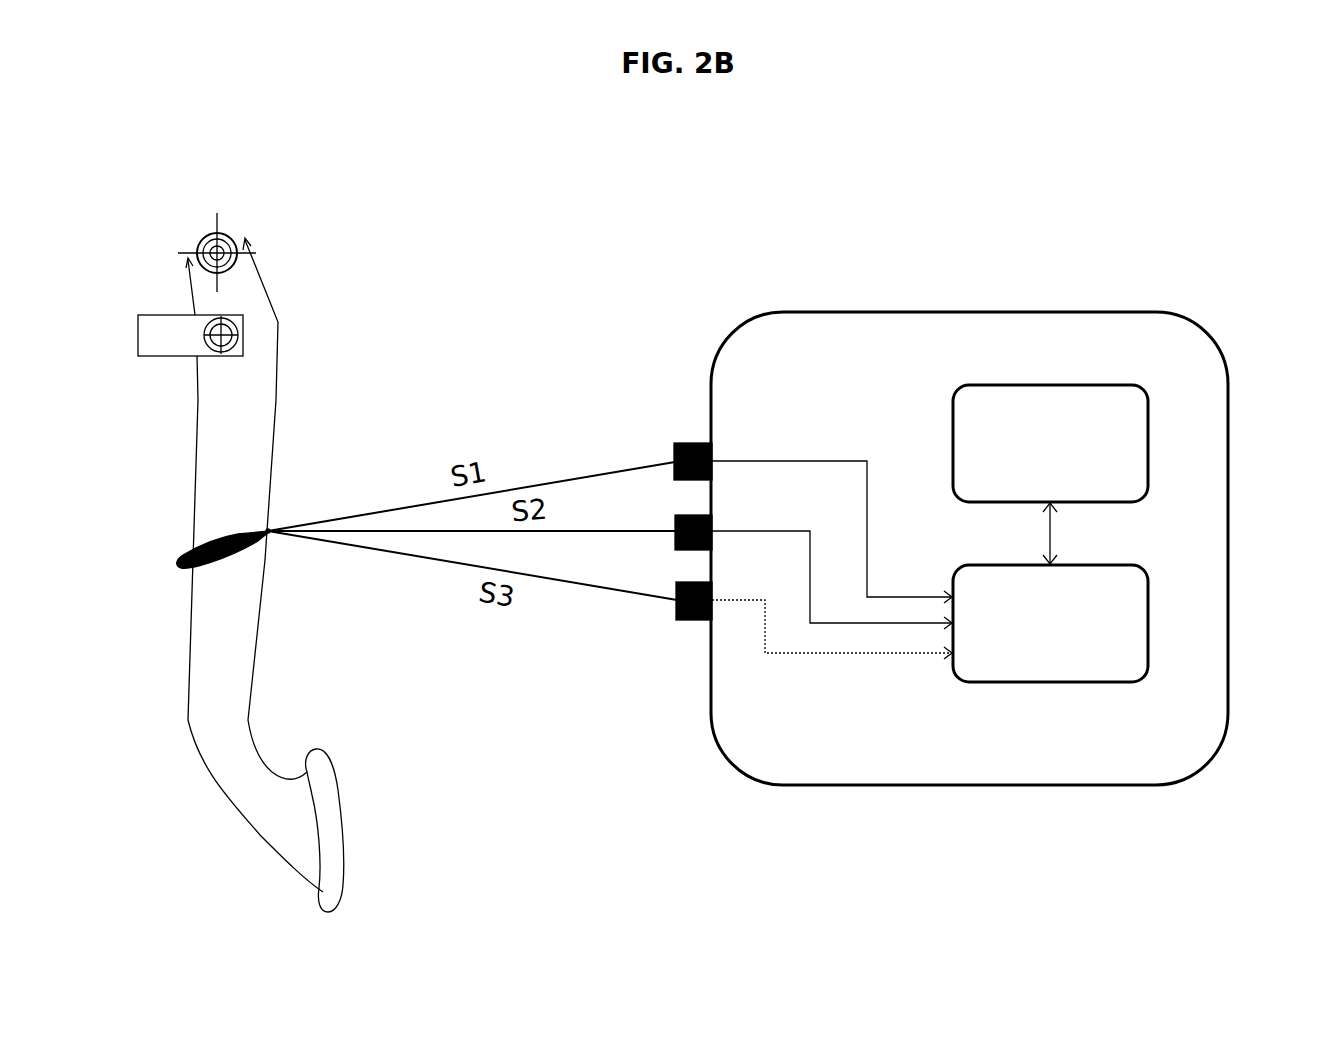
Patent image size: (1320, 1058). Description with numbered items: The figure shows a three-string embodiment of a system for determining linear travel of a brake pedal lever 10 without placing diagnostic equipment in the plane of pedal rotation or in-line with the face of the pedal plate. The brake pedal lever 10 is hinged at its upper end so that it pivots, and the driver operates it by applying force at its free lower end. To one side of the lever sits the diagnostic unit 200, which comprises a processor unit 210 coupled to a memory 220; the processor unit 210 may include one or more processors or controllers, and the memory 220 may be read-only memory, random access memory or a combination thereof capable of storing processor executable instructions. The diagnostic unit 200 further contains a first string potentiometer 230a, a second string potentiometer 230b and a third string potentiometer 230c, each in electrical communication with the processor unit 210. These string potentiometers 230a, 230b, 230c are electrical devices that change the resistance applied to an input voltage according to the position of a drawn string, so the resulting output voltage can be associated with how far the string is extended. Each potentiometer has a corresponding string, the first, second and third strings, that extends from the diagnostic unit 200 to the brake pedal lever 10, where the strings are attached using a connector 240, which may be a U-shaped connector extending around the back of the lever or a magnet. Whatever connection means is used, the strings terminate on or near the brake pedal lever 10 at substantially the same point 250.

The brake pedal lever 10 is at (279, 322).
The diagnostic unit 200 is at (1204, 326).
The processor unit 210 is at (988, 684).
The memory 220 is at (968, 384).
The first string potentiometer 230a is at (696, 442).
The second string potentiometer 230b is at (698, 514).
The third string potentiometer 230c is at (690, 621).
The connector 240 is at (180, 548).
The point 250 is at (270, 540).